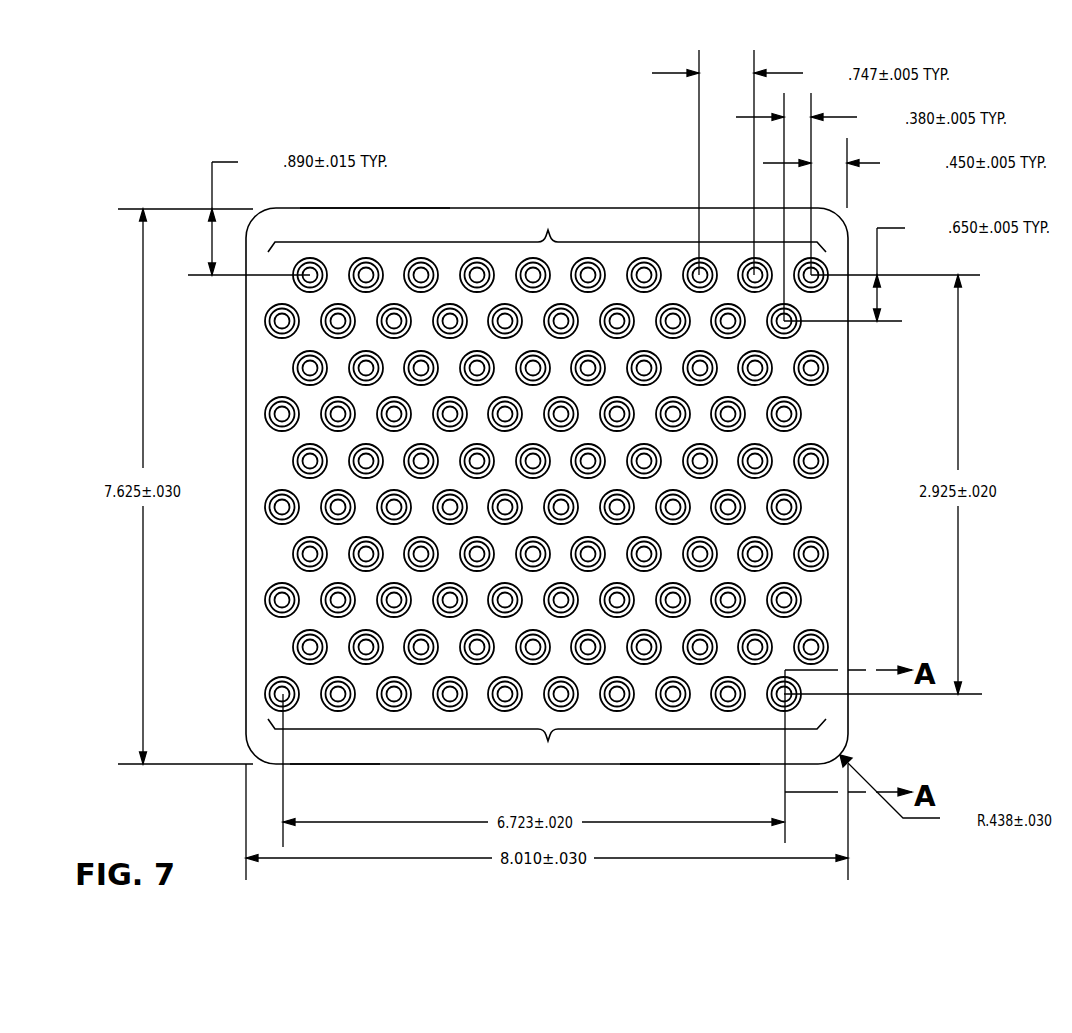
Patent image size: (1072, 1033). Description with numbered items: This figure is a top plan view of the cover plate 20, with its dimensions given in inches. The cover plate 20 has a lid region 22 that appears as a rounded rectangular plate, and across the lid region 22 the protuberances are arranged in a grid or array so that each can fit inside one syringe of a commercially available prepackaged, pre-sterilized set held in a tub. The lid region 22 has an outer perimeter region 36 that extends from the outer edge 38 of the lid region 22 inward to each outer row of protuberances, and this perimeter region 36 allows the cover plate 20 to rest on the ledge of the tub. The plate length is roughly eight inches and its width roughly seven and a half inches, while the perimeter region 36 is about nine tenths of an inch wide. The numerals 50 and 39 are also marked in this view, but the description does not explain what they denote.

The cover plate 20 is at (138, 167).
The lid region 22 is at (372, 213).
The chamfered lead-in region 50 is at (548, 229).
The bottom chamfer region 39 is at (548, 741).
The outer edge 38 is at (331, 767).
The outer perimeter region 36 is at (673, 752).